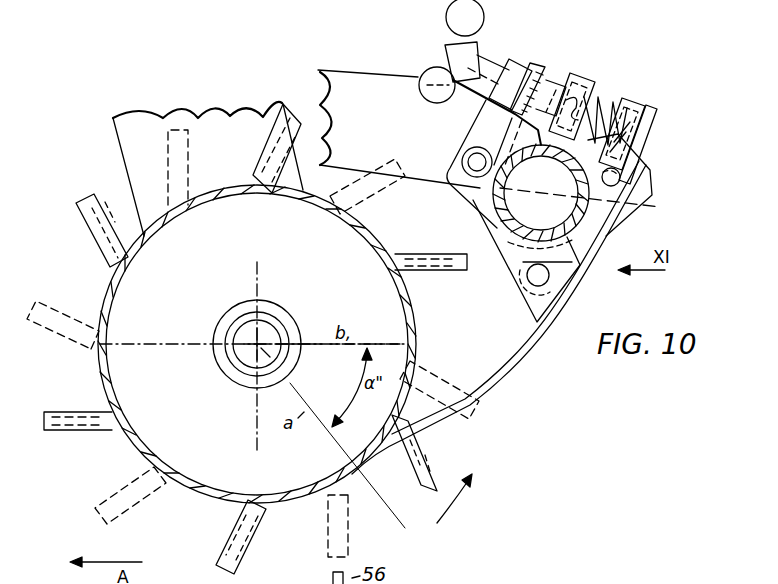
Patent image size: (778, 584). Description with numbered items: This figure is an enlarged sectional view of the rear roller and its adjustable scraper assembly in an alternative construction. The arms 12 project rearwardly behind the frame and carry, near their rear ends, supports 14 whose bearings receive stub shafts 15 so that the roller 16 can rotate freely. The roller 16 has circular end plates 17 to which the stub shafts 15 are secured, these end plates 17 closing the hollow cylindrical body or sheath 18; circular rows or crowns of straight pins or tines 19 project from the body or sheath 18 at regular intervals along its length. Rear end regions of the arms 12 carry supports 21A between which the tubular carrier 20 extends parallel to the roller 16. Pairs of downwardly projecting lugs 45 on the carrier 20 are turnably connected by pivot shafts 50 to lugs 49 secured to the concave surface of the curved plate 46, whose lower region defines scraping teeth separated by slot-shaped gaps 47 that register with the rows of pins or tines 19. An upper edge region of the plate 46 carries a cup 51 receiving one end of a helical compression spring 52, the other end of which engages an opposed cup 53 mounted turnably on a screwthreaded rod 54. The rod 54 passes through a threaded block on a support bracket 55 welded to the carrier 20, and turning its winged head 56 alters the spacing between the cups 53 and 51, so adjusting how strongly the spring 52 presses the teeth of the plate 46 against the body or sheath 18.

The arm 12 is at (363, 80).
The support 14 is at (127, 143).
The stub shaft 15 is at (247, 330).
The roller 16 is at (104, 290).
The end plate 17 is at (118, 371).
The body or sheath 18 is at (145, 454).
The pin or tine 19 is at (232, 526).
The tubular carrier 20 is at (496, 226).
The support 21A is at (502, 233).
The lug 45 is at (510, 258).
The plate 46 is at (527, 354).
The slot-shaped gap 47 is at (490, 390).
The lug 49 is at (528, 288).
The pivot shaft 50 is at (533, 306).
The cup 51 is at (640, 104).
The helical compression spring 52 is at (614, 100).
The cup 53 is at (580, 78).
The screwthreaded rod 54 is at (484, 60).
The support bracket 55 is at (500, 127).
The winged head 56 is at (447, 15).